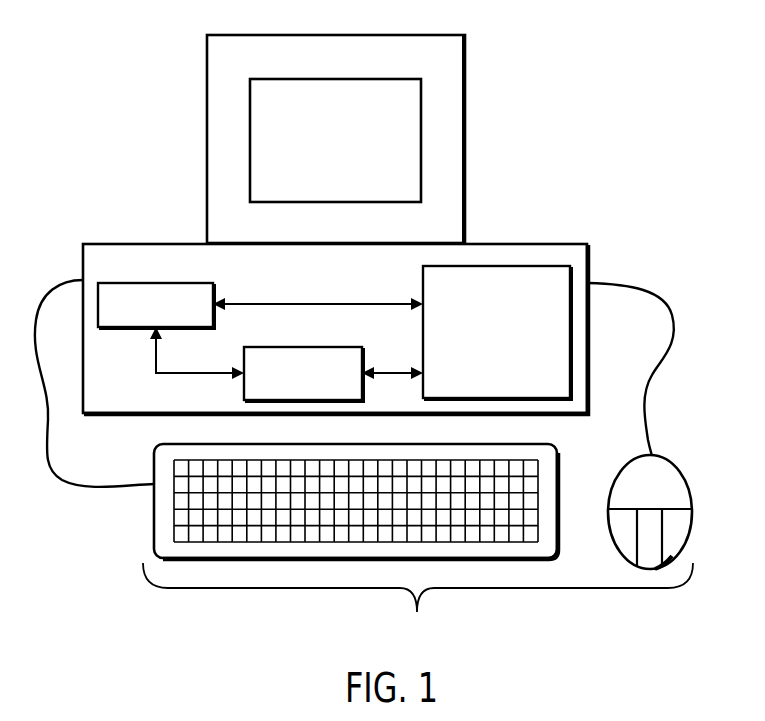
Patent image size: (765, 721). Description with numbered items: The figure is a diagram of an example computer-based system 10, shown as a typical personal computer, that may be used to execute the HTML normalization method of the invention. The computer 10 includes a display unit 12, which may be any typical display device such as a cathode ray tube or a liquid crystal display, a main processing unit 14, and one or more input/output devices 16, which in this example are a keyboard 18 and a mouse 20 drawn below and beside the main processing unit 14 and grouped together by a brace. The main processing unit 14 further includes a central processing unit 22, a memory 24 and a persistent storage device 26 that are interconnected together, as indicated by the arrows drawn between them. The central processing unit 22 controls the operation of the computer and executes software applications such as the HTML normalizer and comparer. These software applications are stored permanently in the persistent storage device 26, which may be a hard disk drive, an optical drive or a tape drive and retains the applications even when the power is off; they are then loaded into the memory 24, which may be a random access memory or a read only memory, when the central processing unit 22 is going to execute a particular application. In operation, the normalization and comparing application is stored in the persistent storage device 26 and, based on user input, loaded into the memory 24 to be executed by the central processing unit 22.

The computer-based system 10 is at (574, 76).
The display unit 12 is at (207, 78).
The main processing unit 14 is at (150, 244).
The input/output devices 16 is at (418, 603).
The keyboard 18 is at (154, 460).
The mouse 20 is at (672, 467).
The central processing unit 22 is at (163, 283).
The memory 24 is at (309, 347).
The persistent storage device 26 is at (423, 273).